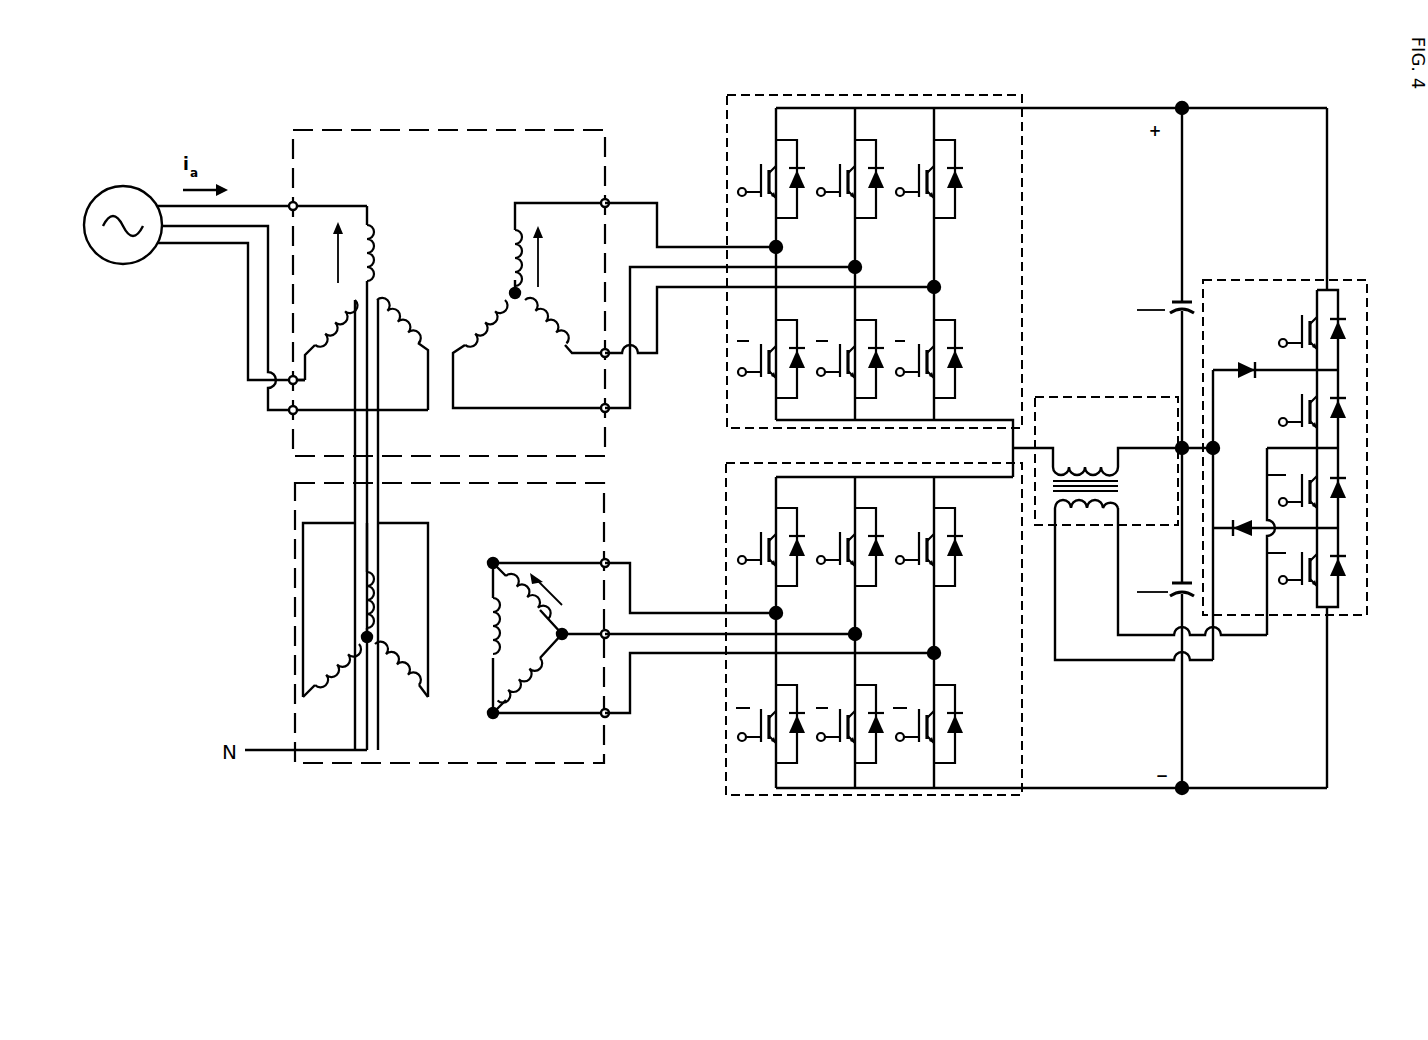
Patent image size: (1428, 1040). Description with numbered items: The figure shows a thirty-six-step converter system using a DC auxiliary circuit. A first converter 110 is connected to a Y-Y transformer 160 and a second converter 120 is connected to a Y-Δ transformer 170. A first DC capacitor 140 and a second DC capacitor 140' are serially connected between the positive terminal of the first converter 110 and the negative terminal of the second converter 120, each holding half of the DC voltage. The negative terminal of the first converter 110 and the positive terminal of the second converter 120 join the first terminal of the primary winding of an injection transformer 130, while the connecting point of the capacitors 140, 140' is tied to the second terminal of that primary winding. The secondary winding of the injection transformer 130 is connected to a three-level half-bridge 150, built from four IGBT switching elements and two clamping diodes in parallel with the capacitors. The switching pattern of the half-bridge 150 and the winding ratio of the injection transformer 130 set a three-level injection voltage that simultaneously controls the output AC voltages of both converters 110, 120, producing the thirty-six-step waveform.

The first converter 110 is at (925, 95).
The second converter 120 is at (888, 797).
The injection transformer 130 is at (1066, 397).
The first DC capacitor 140 is at (1156, 278).
The second DC capacitor 140' is at (1189, 618).
The 3-level half-bridge 150 is at (1277, 280).
The Y-Y transformer 160 is at (528, 130).
The Y-Δ transformer 170 is at (488, 767).